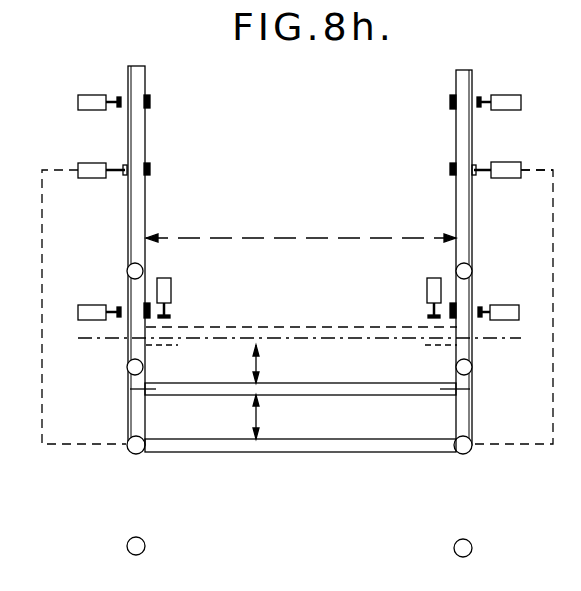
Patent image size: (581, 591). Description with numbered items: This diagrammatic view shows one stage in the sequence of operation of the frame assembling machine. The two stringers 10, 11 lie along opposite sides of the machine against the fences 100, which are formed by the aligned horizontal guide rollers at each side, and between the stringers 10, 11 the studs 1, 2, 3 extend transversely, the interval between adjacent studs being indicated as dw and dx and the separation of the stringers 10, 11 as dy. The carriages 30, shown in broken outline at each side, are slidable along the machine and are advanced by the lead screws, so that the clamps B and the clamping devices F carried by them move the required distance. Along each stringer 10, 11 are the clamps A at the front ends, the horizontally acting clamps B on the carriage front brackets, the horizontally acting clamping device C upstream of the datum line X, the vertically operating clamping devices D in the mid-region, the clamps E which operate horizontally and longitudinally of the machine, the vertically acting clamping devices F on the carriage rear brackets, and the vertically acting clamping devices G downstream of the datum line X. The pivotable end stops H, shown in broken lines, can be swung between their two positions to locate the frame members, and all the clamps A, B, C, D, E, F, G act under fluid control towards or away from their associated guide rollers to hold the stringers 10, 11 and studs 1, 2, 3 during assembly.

The stud 1 is at (310, 443).
The stud 2 is at (308, 386).
The stud 3 is at (326, 330).
The stringer 10 is at (459, 81).
The stringer 11 is at (138, 84).
The carriage 30 is at (40, 240).
The fence 100 is at (148, 108).
The clamp A is at (97, 104).
The clamp B is at (88, 173).
The clamping device C is at (88, 312).
The clamping device D is at (127, 270).
The clamp E is at (165, 289).
The clamping device F is at (130, 452).
The clamping device G is at (127, 543).
The end stop H is at (178, 345).
The datum line X is at (298, 341).
The stud spacing dx is at (258, 418).
The stringer interval dy is at (301, 227).
The stud spacing dw is at (258, 355).